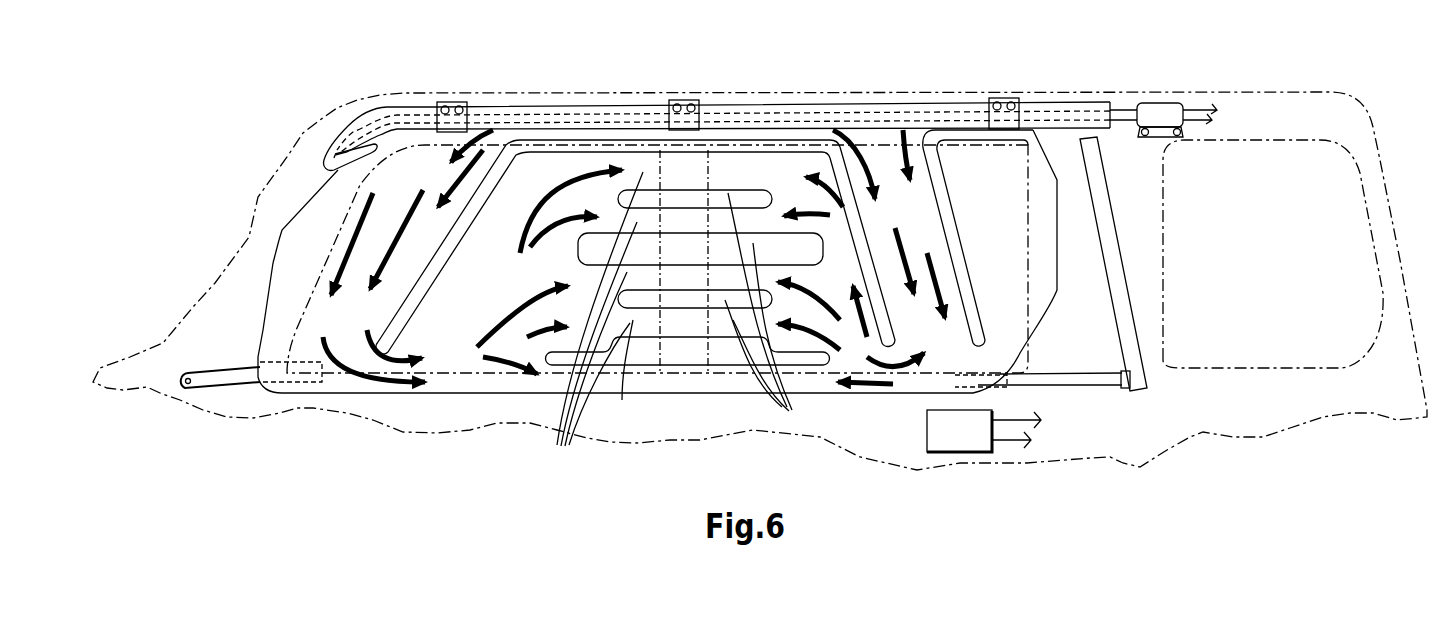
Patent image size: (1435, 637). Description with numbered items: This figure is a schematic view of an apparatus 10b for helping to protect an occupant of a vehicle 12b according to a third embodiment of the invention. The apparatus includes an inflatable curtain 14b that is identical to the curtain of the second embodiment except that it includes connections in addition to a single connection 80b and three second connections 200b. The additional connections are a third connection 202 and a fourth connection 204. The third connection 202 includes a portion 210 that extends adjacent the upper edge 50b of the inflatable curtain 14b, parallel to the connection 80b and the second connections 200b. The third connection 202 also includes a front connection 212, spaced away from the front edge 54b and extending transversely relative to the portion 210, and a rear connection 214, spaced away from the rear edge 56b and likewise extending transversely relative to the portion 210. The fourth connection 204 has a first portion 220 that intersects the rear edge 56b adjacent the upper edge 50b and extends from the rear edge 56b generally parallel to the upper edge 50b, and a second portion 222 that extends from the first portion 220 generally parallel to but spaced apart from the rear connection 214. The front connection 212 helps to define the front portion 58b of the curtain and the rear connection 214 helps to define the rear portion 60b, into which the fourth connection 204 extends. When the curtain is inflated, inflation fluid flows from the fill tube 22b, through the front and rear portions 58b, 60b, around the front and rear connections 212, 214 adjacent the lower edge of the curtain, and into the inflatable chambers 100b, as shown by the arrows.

The apparatus 10b is at (316, 102).
The vehicle 12b is at (252, 150).
The inflatable curtain 14b is at (462, 345).
The fill tube 22b is at (745, 120).
The upper edge 50b is at (908, 104).
The front edge 54b is at (277, 240).
The rear edge 56b is at (1057, 240).
The front portion 58b is at (347, 277).
The rear portion 60b is at (953, 302).
The connection 80b is at (622, 400).
The inflatable chambers 100b is at (578, 323).
The second connections 200b is at (787, 407).
The third connection 202 is at (430, 283).
The fourth connection 204 is at (948, 197).
The portion of third connection 210 is at (693, 147).
The front connection 212 is at (472, 220).
The rear connection 214 is at (875, 267).
The first portion of fourth connection 220 is at (967, 135).
The second portion of fourth connection 222 is at (952, 237).